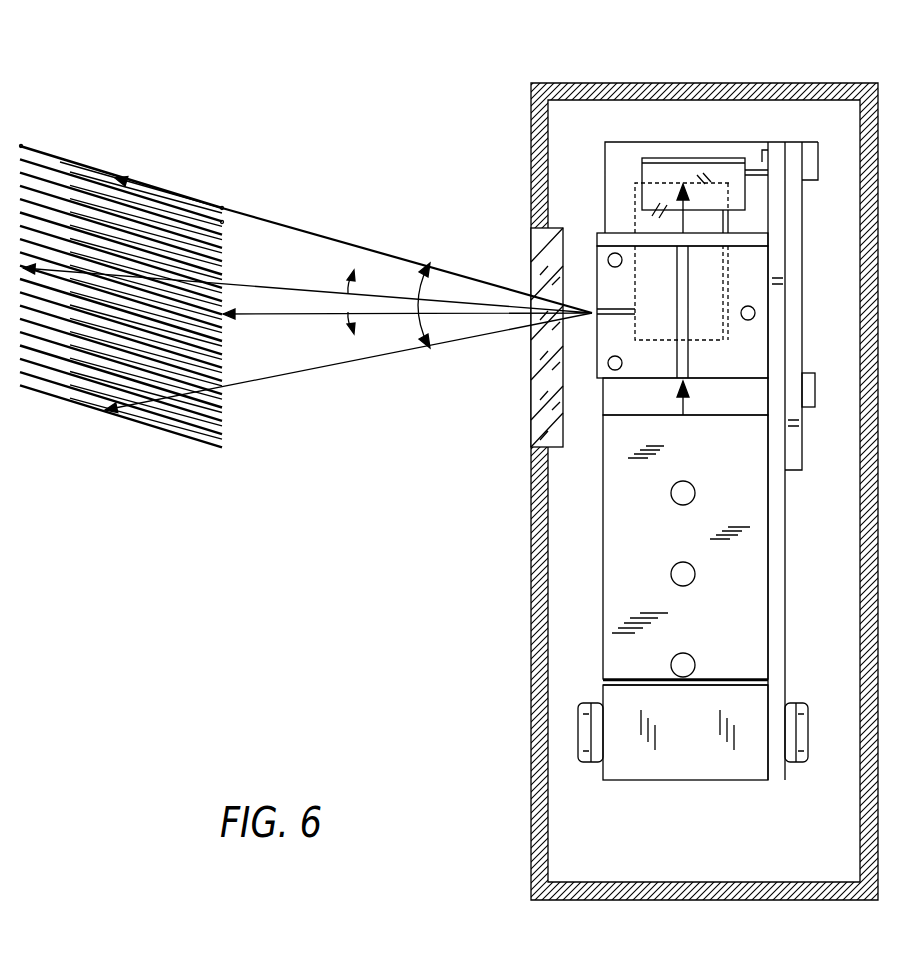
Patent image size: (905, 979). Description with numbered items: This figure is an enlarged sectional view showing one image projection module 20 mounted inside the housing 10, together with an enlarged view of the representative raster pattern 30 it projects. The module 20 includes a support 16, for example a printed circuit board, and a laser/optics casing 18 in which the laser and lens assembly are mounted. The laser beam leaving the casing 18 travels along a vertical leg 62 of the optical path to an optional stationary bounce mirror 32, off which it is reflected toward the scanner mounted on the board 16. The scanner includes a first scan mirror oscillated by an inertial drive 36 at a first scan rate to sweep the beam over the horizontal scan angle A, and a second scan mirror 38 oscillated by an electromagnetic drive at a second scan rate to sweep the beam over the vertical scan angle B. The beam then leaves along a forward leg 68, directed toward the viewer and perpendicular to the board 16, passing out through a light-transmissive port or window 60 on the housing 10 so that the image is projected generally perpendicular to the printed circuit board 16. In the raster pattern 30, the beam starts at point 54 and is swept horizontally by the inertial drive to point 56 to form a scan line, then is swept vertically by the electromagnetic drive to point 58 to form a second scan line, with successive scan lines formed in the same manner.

The housing 10 is at (850, 83).
The support 16 is at (782, 601).
The laser/optics casing 18 is at (612, 607).
The image projection module 20 is at (749, 798).
The raster pattern 30 is at (263, 102).
The stationary bounce mirror 32 is at (650, 173).
The inertial drive 36 is at (758, 335).
The second scan mirror 38 is at (640, 222).
The starting point 54 is at (222, 208).
The end point of scan line 56 is at (21, 146).
The point of second scan line 58 is at (222, 222).
The light-transmissive window 60 is at (556, 288).
The vertical leg 62 is at (684, 402).
The forward leg 68 is at (295, 352).